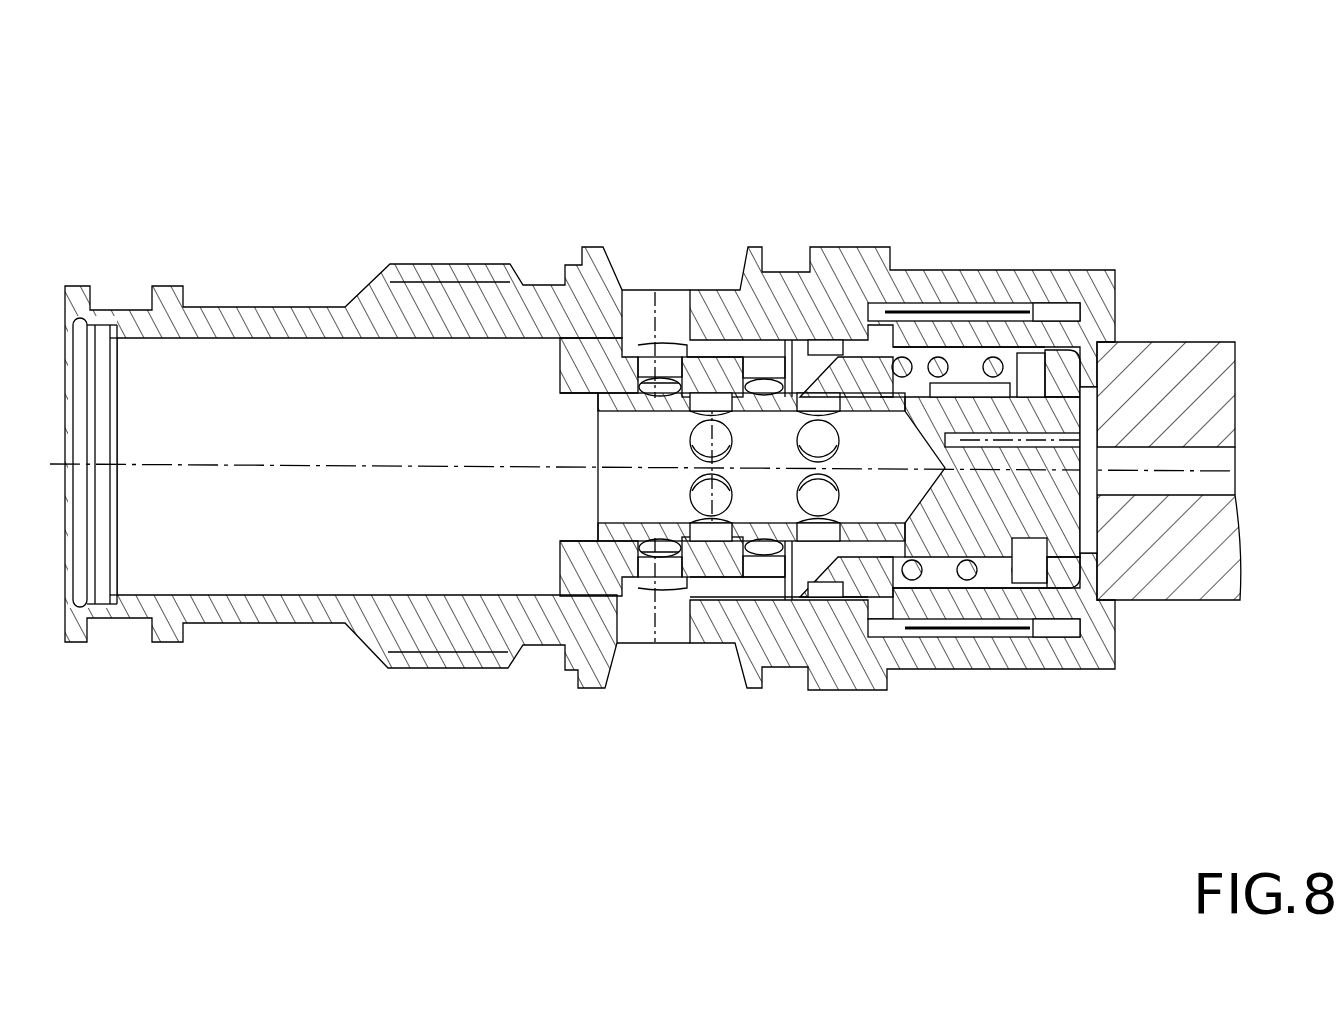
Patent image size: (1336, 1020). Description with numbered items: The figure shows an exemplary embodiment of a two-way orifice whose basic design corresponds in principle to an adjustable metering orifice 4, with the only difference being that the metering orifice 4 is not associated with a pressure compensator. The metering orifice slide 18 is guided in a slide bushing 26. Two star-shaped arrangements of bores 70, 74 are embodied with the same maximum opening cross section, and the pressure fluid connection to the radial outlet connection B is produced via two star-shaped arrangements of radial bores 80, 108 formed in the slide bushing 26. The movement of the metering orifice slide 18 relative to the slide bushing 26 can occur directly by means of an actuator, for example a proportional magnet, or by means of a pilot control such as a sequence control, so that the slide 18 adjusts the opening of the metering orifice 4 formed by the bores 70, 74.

The star-shaped arrangement of radial bores 80 is at (650, 372).
The radial outlet connection B is at (680, 322).
The metering orifice 4 is at (716, 258).
The star-shaped arrangement of radial bores 108 is at (786, 340).
The slide bushing 26 is at (873, 352).
The star-shaped arrangement of bores 70 is at (704, 560).
The star-shaped arrangement of bores 74 is at (808, 555).
The metering orifice slide 18 is at (973, 490).